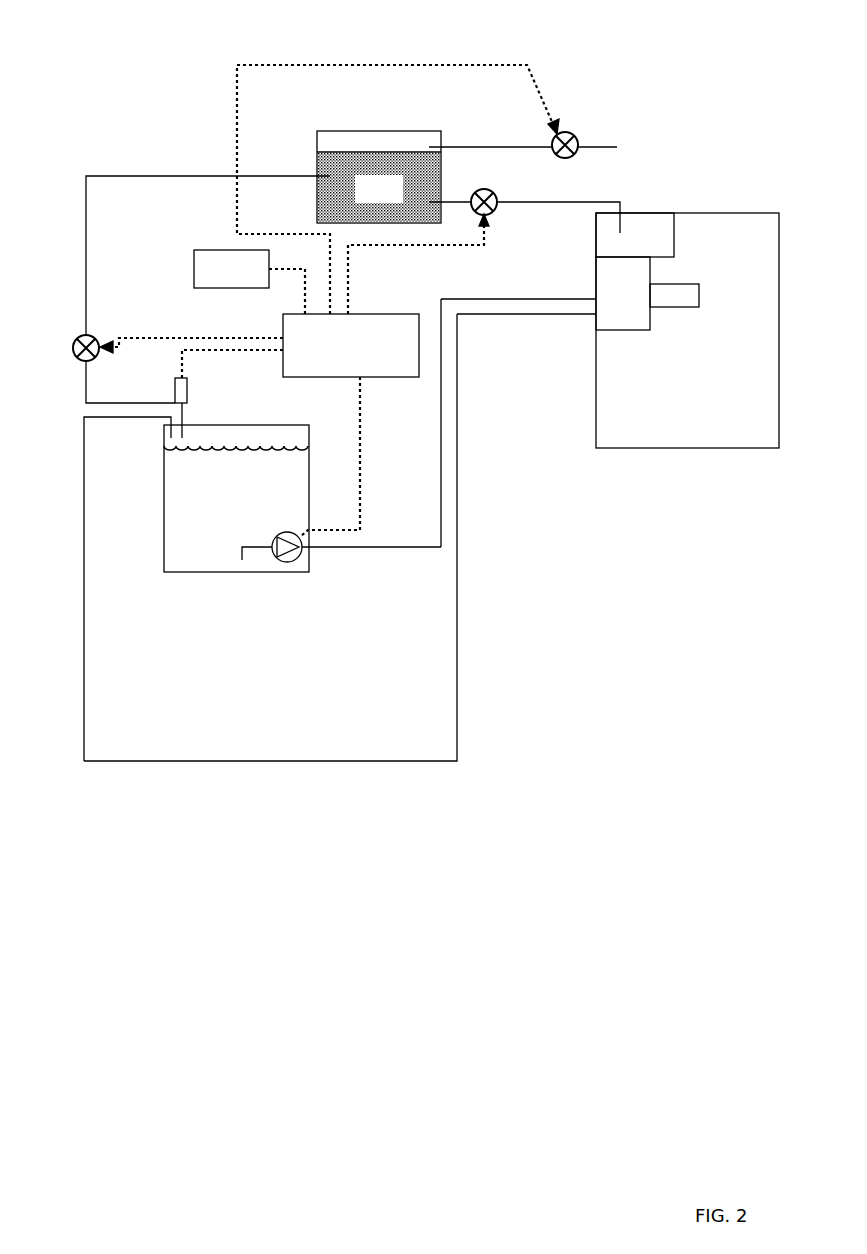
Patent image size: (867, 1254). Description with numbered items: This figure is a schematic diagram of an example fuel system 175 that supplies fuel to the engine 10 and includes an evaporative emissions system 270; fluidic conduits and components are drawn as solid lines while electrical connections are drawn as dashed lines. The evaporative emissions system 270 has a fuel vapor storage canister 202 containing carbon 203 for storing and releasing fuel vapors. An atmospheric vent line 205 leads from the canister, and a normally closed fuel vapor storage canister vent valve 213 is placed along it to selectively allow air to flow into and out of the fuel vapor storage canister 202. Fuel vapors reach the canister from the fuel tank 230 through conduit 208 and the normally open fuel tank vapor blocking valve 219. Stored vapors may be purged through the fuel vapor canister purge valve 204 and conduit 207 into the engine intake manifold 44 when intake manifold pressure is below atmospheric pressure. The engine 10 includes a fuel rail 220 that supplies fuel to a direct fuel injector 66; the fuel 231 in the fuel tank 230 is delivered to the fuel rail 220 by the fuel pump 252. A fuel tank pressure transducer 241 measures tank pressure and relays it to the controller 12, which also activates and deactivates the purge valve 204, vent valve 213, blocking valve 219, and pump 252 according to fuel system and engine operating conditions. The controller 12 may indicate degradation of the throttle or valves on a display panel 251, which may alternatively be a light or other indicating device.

The fuel system 175 is at (114, 48).
The evaporative emissions system 270 is at (540, 44).
The fuel vapor storage canister 202 is at (317, 131).
The carbon 203 is at (379, 187).
The atmospheric vent line 205 is at (459, 147).
The fuel vapor storage canister vent valve 213 is at (562, 131).
The fuel vapor canister purge valve 204 is at (484, 189).
The conduit 207 is at (520, 203).
The engine 10 is at (779, 282).
The engine intake manifold 44 is at (635, 235).
The fuel rail 220 is at (545, 293).
The direct fuel injector 66 is at (674, 295).
The conduit 208 is at (86, 223).
The fuel tank vapor blocking valve 219 is at (94, 337).
The display panel 251 is at (249, 282).
The controller 12 is at (351, 345).
The fuel tank pressure transducer 241 is at (175, 393).
The fuel tank 230 is at (190, 425).
The fuel 231 is at (257, 492).
The fuel pump 252 is at (277, 535).